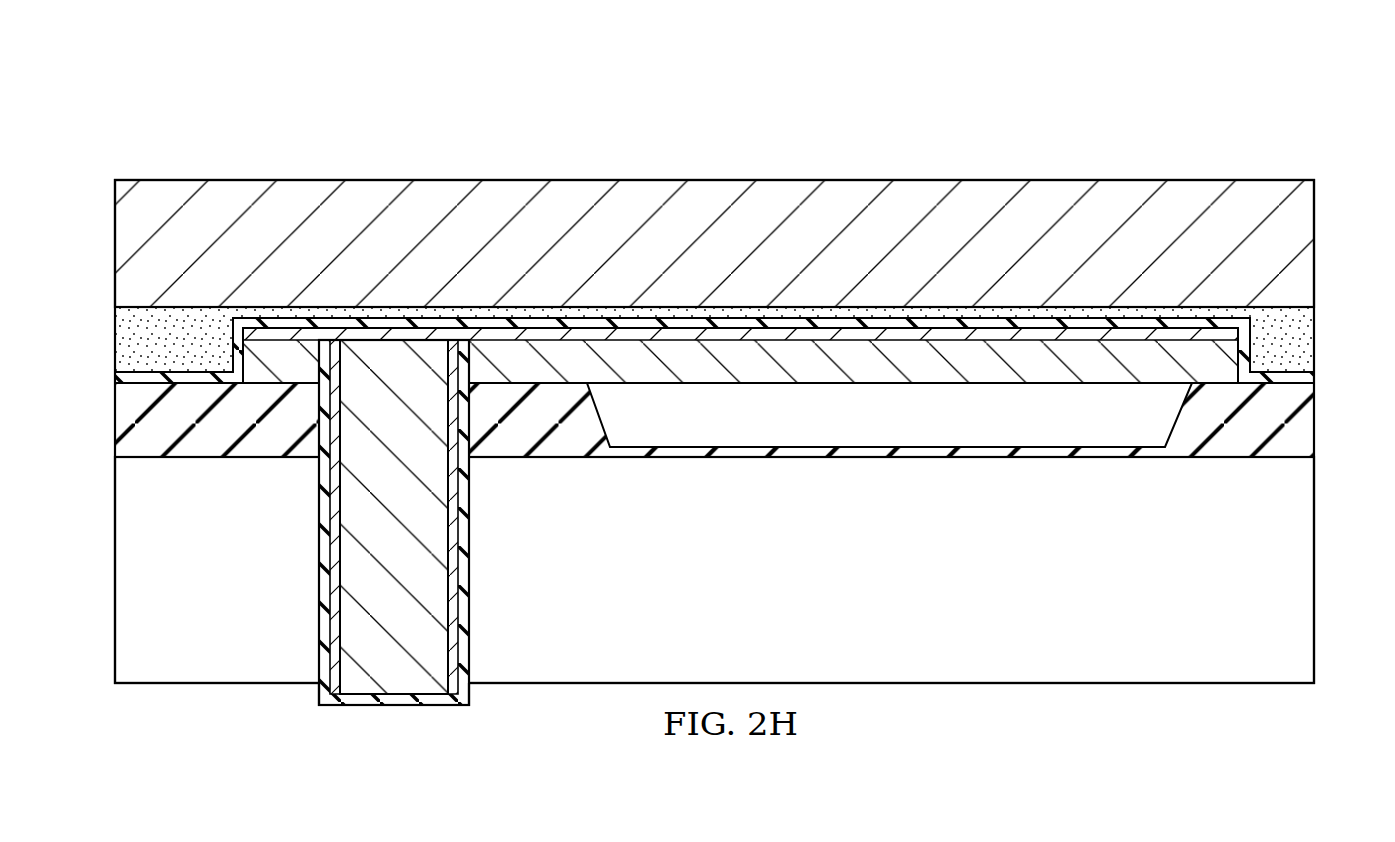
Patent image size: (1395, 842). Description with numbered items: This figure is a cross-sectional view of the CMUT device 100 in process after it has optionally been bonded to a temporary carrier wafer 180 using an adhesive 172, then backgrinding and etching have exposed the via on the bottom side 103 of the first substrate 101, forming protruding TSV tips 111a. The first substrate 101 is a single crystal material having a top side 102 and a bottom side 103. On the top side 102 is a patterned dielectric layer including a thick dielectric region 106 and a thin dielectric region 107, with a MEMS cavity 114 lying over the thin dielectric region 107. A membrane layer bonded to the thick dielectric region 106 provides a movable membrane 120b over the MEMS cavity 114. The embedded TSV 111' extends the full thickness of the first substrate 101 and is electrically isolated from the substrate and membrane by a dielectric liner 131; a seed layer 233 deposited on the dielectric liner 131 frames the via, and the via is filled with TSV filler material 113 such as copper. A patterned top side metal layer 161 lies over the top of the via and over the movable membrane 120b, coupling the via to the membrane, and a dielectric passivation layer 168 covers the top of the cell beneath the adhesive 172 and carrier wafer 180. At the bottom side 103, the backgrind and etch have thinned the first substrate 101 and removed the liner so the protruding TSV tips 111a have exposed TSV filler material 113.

The CMUT device 100 is at (395, 133).
The temporary carrier wafer 180 is at (855, 187).
The adhesive 172 is at (122, 340).
The dielectric passivation layer 168 is at (122, 376).
The top side metal layer 161 is at (795, 340).
The movable membrane 120b is at (947, 372).
The thick dielectric region 106 is at (122, 421).
The MEMS cavity 114 is at (905, 425).
The thin dielectric region 107 is at (922, 457).
The top side 102 is at (1153, 468).
The first substrate 101 is at (912, 585).
The bottom side 103 is at (1240, 685).
The embedded TSV 111' is at (394, 570).
The dielectric liner 131 is at (325, 522).
The seed layer 233 is at (337, 627).
The TSV filler material 113 is at (413, 532).
The protruding TSV tips 111a is at (297, 700).